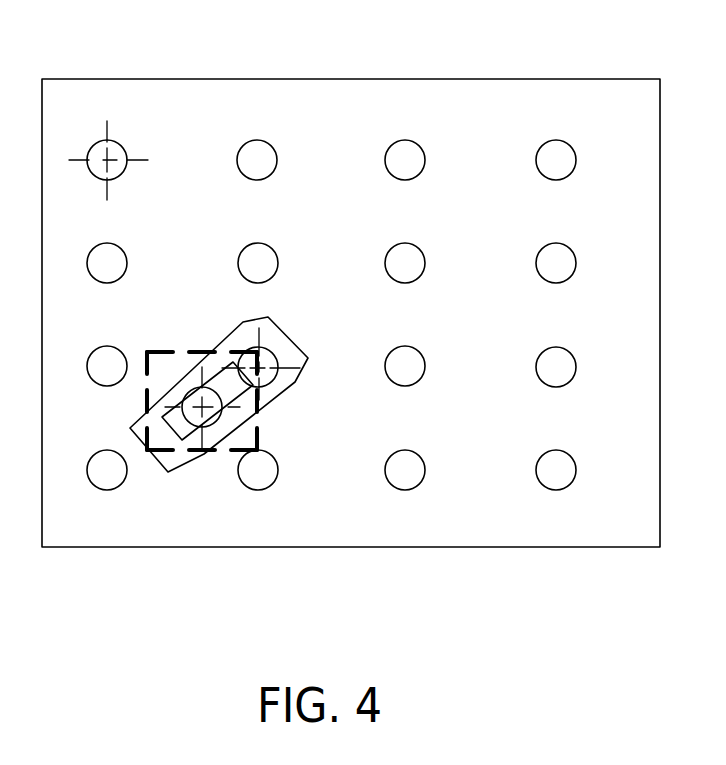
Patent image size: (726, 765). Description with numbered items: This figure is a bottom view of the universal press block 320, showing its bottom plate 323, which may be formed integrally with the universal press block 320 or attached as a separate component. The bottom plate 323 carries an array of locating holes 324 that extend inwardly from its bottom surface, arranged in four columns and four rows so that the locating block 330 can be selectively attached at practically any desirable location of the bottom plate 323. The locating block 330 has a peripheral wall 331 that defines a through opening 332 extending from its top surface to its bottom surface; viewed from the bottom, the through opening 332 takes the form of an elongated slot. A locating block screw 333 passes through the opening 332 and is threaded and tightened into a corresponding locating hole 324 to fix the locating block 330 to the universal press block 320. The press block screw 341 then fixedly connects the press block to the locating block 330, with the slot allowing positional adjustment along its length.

The universal press block 320 is at (379, 273).
The bottom plate 323 is at (633, 202).
The locating holes 324 is at (567, 155).
The locating block 330 is at (252, 422).
The peripheral wall 331 is at (298, 348).
The through opening 332 is at (222, 387).
The locating block screw 333 is at (233, 362).
The press block screw 341 is at (206, 416).